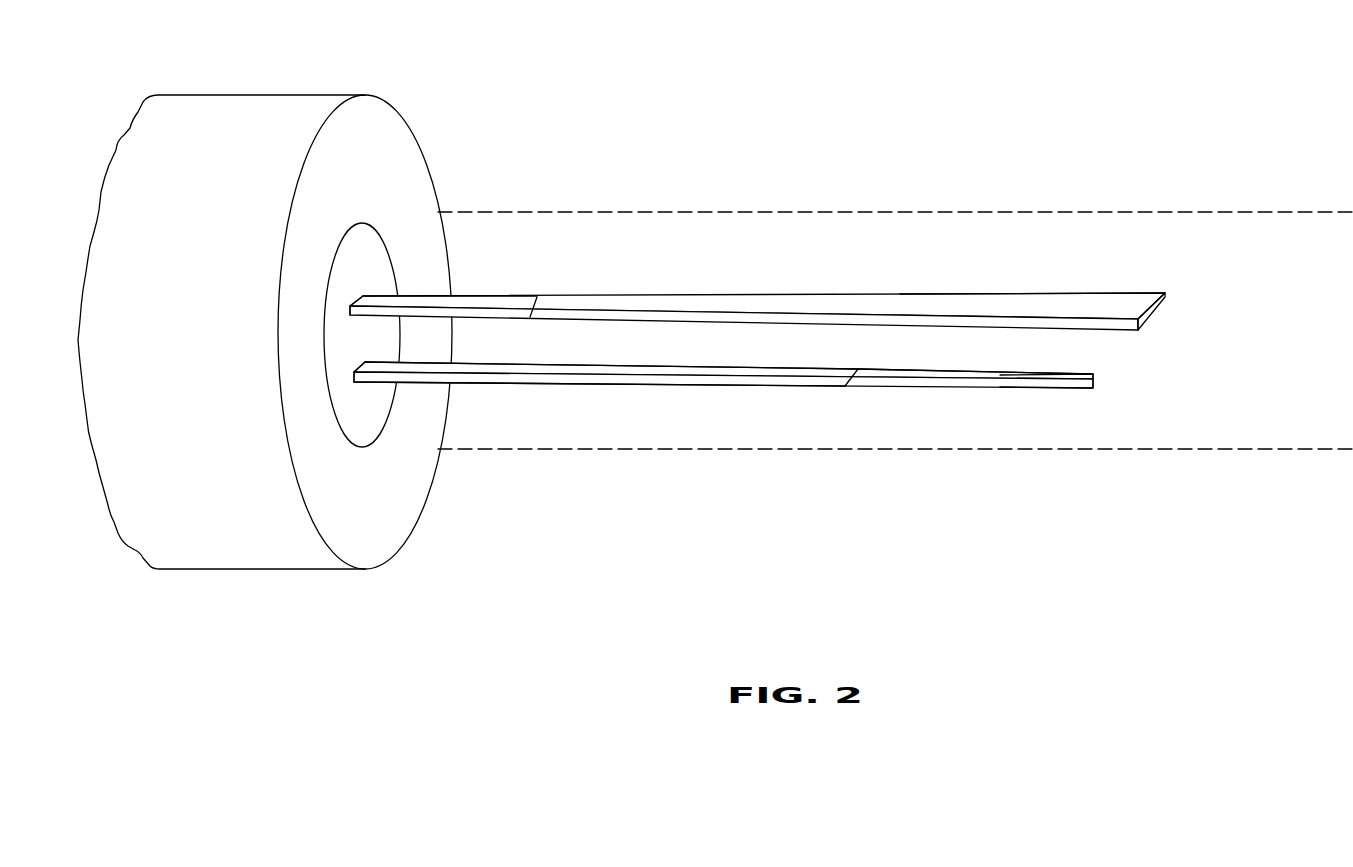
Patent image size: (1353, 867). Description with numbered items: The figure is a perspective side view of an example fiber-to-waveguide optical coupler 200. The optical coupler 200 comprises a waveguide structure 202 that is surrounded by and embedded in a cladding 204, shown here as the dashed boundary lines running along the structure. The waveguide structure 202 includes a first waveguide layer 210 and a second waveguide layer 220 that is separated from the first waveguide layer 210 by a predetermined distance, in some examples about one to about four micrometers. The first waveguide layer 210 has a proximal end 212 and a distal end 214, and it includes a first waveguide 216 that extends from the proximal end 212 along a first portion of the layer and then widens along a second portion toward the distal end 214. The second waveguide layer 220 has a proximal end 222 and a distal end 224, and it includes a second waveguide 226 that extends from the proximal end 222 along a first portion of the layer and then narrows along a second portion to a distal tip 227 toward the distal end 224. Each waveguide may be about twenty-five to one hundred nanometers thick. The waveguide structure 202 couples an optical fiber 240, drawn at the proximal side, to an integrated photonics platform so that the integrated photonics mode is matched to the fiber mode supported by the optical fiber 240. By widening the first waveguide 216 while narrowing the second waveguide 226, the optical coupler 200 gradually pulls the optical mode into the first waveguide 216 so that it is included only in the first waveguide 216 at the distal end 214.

The fiber-to-waveguide optical coupler 200 is at (715, 305).
The waveguide structure 202 is at (1235, 250).
The cladding 204 is at (877, 449).
The first waveguide layer 210 is at (791, 254).
The proximal end 212 is at (410, 302).
The distal end 214 is at (1100, 300).
The first waveguide 216 is at (457, 302).
The second waveguide layer 220 is at (766, 461).
The proximal end 222 is at (388, 365).
The distal end 224 is at (1067, 388).
The second waveguide 226 is at (527, 372).
The distal tip 227 is at (962, 388).
The optical fiber 240 is at (274, 110).